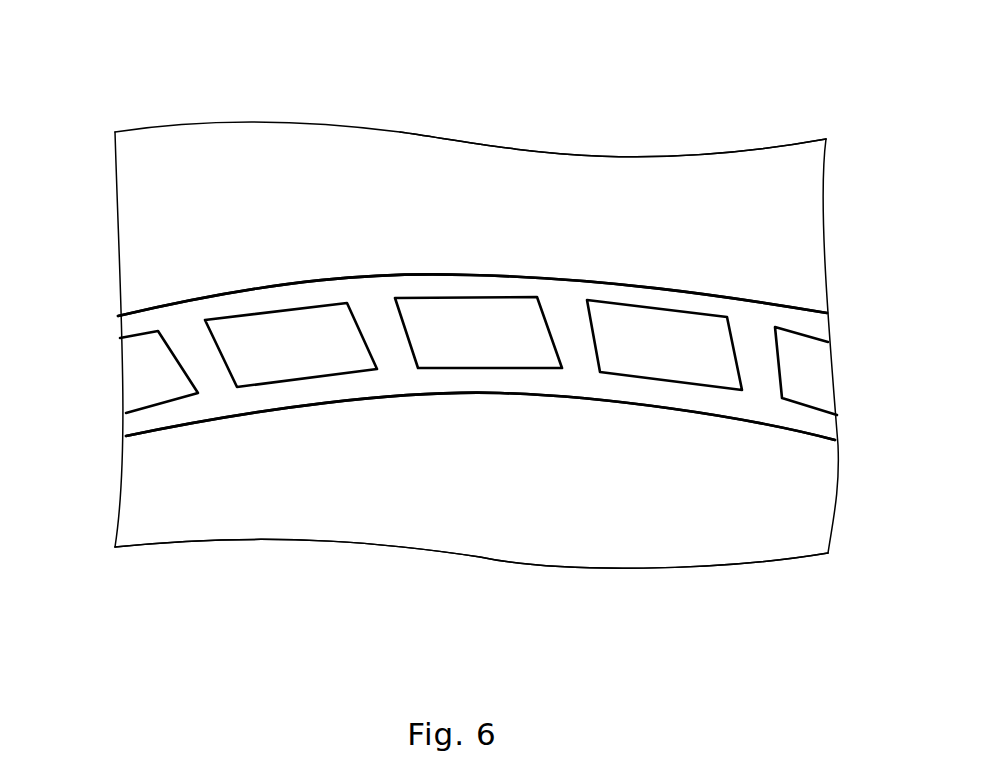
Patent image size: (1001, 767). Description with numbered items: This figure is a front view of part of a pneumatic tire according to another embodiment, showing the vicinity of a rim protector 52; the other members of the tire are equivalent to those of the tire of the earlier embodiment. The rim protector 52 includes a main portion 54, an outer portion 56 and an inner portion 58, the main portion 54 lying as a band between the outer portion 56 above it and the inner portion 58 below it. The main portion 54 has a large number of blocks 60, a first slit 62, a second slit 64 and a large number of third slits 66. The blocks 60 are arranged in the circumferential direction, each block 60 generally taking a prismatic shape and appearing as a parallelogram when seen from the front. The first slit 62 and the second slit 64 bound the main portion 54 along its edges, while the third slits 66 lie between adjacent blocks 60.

The rim protector 52 is at (780, 215).
The main portion 54 is at (311, 282).
The outer portion 56 is at (502, 220).
The inner portion 58 is at (490, 452).
The block 60 is at (147, 357).
The first slit 62 is at (430, 287).
The second slit 64 is at (448, 380).
The third slit 66 is at (205, 363).